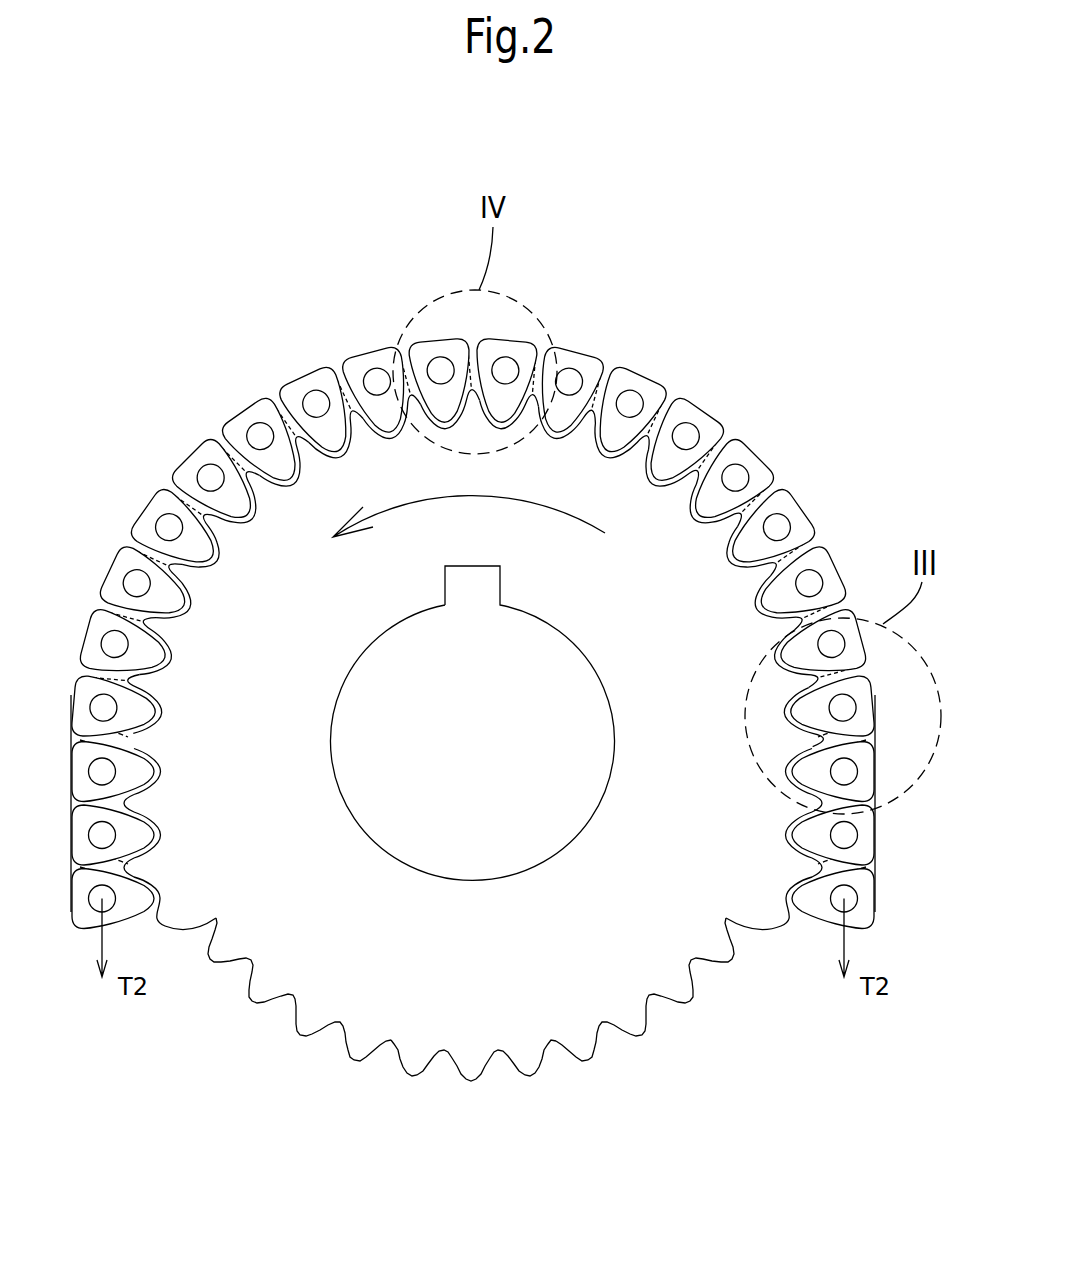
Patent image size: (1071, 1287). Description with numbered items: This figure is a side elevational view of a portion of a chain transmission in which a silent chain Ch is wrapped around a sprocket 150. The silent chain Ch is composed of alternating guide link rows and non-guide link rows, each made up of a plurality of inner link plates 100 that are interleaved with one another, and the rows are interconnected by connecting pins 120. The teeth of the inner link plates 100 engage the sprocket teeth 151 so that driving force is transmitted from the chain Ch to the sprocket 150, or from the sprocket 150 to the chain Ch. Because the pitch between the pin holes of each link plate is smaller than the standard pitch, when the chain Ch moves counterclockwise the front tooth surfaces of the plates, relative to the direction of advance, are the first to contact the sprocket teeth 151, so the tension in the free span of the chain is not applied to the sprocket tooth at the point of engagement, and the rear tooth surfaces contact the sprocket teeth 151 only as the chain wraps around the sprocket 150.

The inner link plate 100 is at (785, 505).
The connecting pin 120 is at (810, 582).
The sprocket 150 is at (473, 786).
The sprocket tooth 151 is at (472, 1063).
The silent chain Ch is at (523, 622).